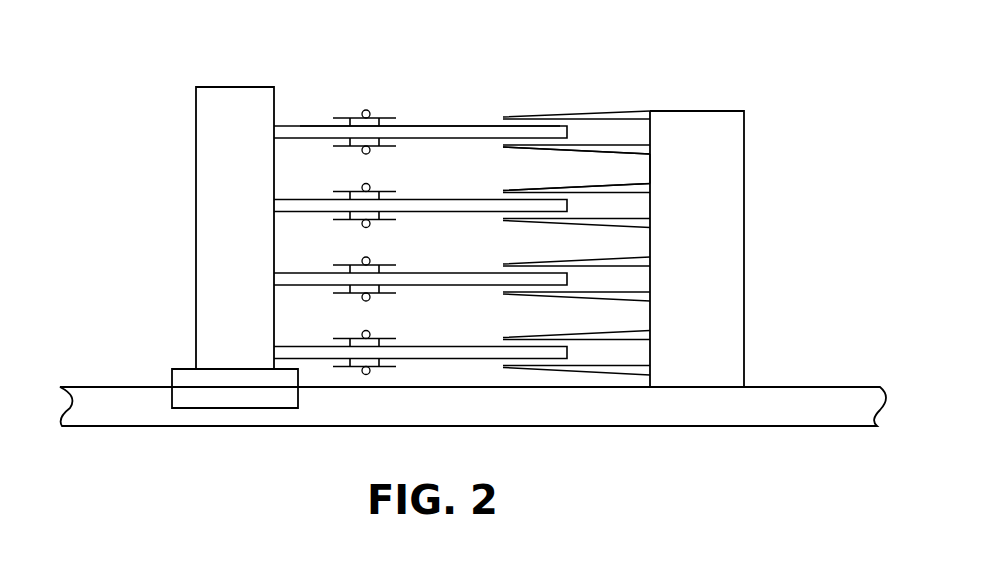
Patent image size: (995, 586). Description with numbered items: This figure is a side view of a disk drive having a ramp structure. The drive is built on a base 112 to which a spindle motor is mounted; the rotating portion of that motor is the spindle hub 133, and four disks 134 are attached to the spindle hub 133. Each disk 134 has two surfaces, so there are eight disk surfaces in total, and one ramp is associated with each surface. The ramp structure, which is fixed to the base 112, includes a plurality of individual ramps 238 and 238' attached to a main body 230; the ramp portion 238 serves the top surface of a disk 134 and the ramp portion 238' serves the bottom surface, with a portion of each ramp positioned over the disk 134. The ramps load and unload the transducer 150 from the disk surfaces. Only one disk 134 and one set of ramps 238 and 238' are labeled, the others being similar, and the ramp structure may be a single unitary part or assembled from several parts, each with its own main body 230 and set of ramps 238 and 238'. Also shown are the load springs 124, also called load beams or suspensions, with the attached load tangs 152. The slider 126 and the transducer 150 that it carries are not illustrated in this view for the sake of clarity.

The base 112 is at (772, 387).
The spindle hub 133 is at (185, 369).
The load springs 124 is at (387, 147).
The disk 134 is at (461, 125).
The transducer 150 is at (356, 116).
The slider 126 is at (378, 120).
The load tangs 152 is at (367, 110).
The main body 230 is at (744, 177).
The ramp portion 238 is at (599, 214).
The ramp portion 238' is at (568, 169).